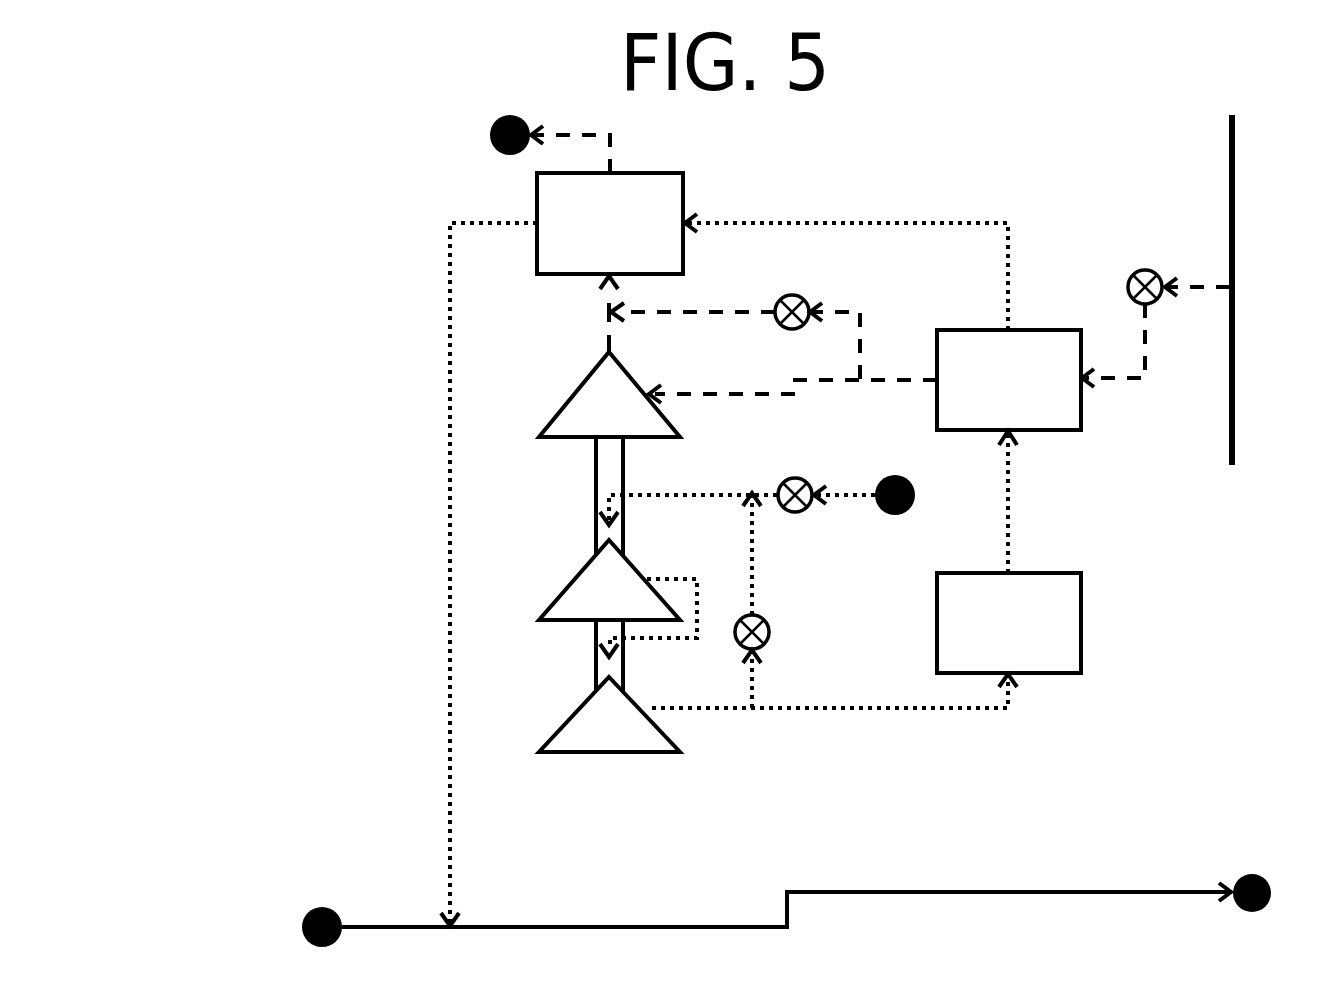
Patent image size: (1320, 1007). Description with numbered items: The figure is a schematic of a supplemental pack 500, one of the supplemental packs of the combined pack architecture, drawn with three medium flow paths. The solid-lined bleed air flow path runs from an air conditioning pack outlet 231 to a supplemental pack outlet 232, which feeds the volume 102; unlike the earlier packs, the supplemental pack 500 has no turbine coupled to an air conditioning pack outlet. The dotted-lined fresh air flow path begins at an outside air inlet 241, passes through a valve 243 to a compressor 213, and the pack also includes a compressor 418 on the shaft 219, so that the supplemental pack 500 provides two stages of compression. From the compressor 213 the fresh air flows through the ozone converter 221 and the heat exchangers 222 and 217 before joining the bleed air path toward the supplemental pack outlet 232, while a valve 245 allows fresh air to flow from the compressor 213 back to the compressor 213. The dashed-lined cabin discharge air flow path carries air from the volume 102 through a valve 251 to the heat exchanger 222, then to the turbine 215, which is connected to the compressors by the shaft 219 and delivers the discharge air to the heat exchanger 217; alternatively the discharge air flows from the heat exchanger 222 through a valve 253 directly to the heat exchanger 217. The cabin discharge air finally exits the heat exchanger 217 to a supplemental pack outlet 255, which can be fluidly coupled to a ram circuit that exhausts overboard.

The supplemental pack 500 is at (265, 136).
The volume 102 is at (1228, 143).
The supplemental pack outlet 255 is at (495, 122).
The heat exchanger 217 is at (583, 248).
The valve 253 is at (783, 297).
The valve 251 is at (1136, 271).
The heat exchanger 222 is at (981, 398).
The ozone converter 221 is at (981, 641).
The turbine 215 is at (582, 423).
The compressor 213 is at (582, 607).
The compressor 418 is at (582, 739).
The shaft 219 is at (596, 495).
The valve 243 is at (781, 481).
The outside air inlet 241 is at (878, 480).
The valve 245 is at (767, 622).
The air conditioning pack outlet 231 is at (308, 915).
The supplemental pack outlet 232 is at (1232, 885).